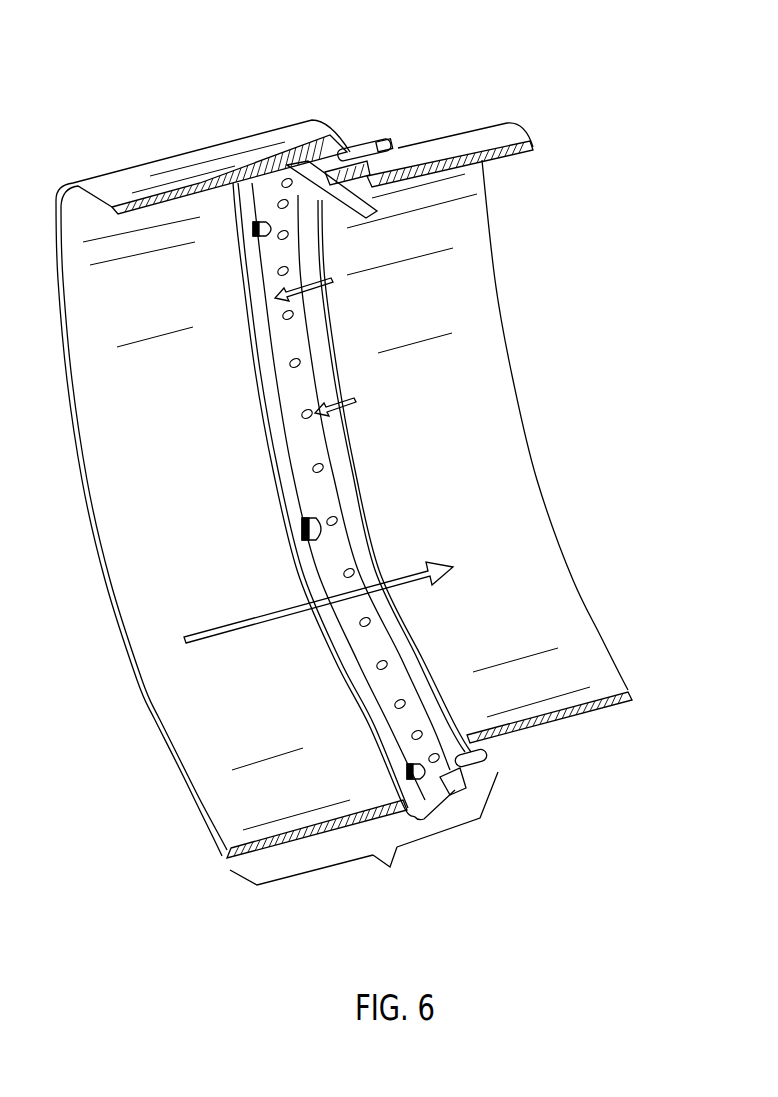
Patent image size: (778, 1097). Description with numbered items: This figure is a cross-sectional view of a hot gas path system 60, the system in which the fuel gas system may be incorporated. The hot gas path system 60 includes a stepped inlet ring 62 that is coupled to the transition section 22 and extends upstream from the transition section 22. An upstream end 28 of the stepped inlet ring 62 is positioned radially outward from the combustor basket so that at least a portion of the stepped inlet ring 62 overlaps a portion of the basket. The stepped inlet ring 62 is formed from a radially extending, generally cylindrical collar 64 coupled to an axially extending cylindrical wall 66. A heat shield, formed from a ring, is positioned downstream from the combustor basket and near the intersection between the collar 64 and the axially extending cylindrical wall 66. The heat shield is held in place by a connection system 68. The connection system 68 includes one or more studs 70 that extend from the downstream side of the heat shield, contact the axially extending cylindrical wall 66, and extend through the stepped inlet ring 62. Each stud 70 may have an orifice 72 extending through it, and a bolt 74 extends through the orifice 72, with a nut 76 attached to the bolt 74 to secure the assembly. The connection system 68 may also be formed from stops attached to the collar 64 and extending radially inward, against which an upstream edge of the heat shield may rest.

The hot gas path system 60 is at (235, 110).
The upstream end 28 is at (128, 657).
The transition section 22 is at (614, 708).
The nut 76 is at (395, 148).
The bolt 74 is at (353, 150).
The stud 70 is at (362, 148).
The orifice 72 is at (372, 146).
The connection system 68 is at (496, 826).
The collar 64 is at (315, 833).
The stepped inlet ring 62 is at (391, 873).
The axially extending cylindrical wall 66 is at (463, 788).